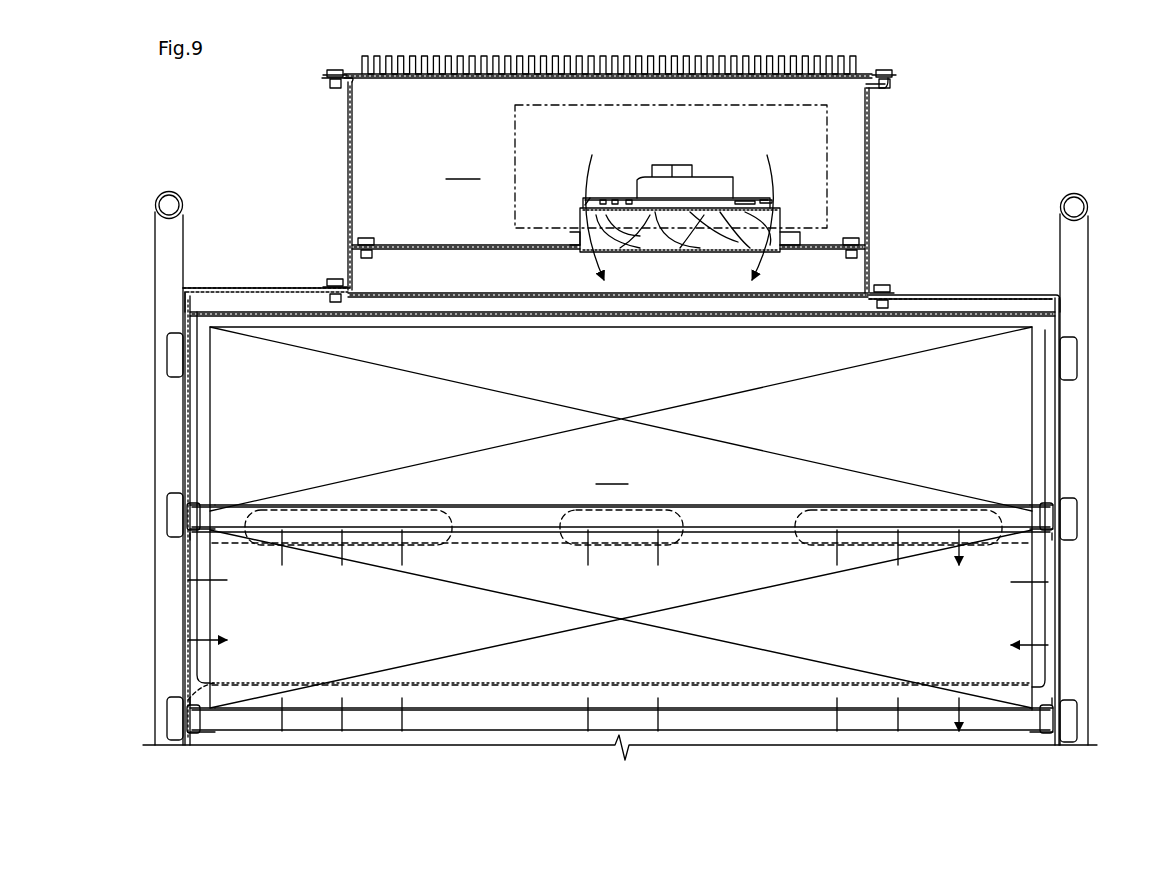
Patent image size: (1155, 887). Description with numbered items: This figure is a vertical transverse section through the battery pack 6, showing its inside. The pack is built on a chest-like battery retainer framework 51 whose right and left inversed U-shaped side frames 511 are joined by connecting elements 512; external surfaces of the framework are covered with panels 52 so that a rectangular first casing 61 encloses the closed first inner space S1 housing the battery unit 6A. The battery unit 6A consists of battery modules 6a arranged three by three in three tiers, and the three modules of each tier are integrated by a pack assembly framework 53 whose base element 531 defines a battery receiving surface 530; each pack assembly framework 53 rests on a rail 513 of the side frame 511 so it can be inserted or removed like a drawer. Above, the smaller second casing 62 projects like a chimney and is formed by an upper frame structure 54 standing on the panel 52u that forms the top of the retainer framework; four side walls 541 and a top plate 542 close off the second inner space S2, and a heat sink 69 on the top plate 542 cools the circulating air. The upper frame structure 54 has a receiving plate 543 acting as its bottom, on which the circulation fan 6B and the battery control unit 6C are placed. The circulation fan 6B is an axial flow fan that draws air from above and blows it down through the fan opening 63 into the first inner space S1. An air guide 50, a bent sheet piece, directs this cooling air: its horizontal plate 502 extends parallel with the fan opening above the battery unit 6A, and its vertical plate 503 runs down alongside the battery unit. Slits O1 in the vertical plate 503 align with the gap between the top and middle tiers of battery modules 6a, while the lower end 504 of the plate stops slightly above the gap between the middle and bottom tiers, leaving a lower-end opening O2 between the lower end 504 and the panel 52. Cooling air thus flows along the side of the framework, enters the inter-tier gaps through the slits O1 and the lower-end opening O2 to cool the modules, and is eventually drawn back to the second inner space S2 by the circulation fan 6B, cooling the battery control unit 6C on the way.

The battery pack 6 is at (216, 150).
The heat sink 69 is at (360, 68).
The upper frame structure 54 is at (346, 123).
The side wall 541 is at (347, 160).
The top plate 542 is at (455, 82).
The receiving plate 543 is at (462, 245).
The battery control unit 6C is at (517, 150).
The second inner space S2 is at (463, 168).
The circulation fan 6B is at (768, 230).
The second casing 62 is at (900, 160).
The first casing 61 is at (252, 280).
The battery retainer framework 51 is at (1092, 216).
The side frame 511 is at (182, 265).
The panel forming top surface 52u is at (905, 290).
The air guide 50 is at (932, 312).
The battery unit 6A is at (975, 330).
The horizontal plate 502 is at (540, 296).
The fan opening 63 is at (683, 265).
The panel 52 is at (185, 422).
The vertical plate 503 is at (192, 452).
The base element 531 is at (198, 506).
The pack assembly framework 53 is at (1058, 515).
The connecting element 512 is at (190, 515).
The rail 513 is at (192, 535).
The battery module 6a is at (212, 612).
The slit O1 is at (428, 510).
The lower-end opening O2 is at (195, 700).
The first inner space S1 is at (612, 473).
The battery receiving surface 530 is at (478, 505).
The lower end 504 is at (460, 700).